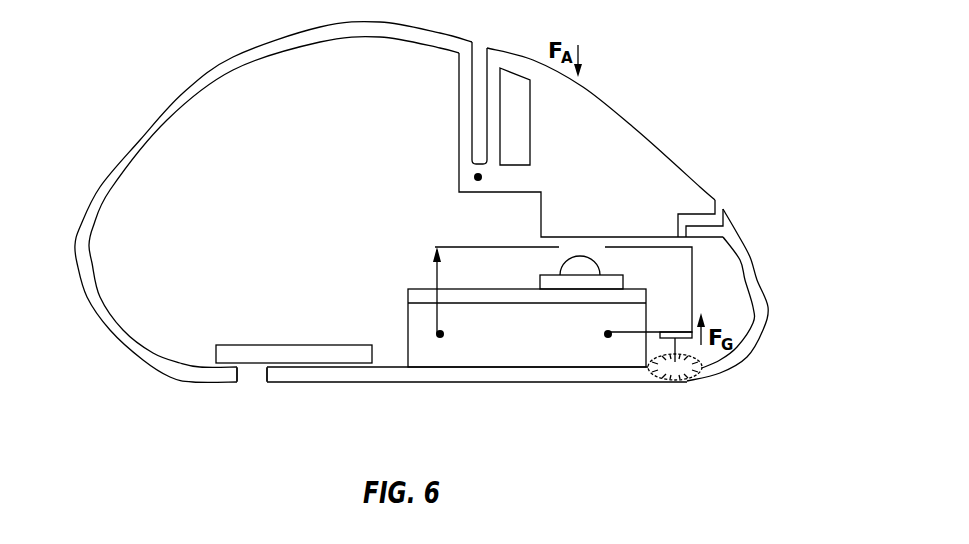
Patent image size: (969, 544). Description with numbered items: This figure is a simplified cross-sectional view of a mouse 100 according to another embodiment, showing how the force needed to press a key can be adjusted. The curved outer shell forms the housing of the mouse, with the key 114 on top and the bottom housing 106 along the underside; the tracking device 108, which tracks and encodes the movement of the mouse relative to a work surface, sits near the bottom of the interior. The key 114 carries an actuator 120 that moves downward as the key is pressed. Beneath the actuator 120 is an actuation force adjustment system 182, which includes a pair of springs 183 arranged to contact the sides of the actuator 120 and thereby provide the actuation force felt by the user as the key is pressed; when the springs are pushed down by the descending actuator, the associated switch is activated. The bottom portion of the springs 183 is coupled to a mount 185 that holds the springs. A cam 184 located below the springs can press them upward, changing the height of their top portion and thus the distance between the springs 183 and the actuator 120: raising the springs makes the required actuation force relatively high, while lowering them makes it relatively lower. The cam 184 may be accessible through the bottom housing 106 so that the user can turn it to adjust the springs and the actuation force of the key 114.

The mouse 100 is at (95, 68).
The key 114 is at (623, 112).
The actuator 120 is at (594, 218).
The actuation force adjustment system 182 is at (693, 298).
The springs 183 is at (489, 247).
The mount 185 is at (531, 353).
The cam 184 is at (675, 381).
The tracking device 108 is at (293, 344).
The bottom housing 106 is at (327, 383).